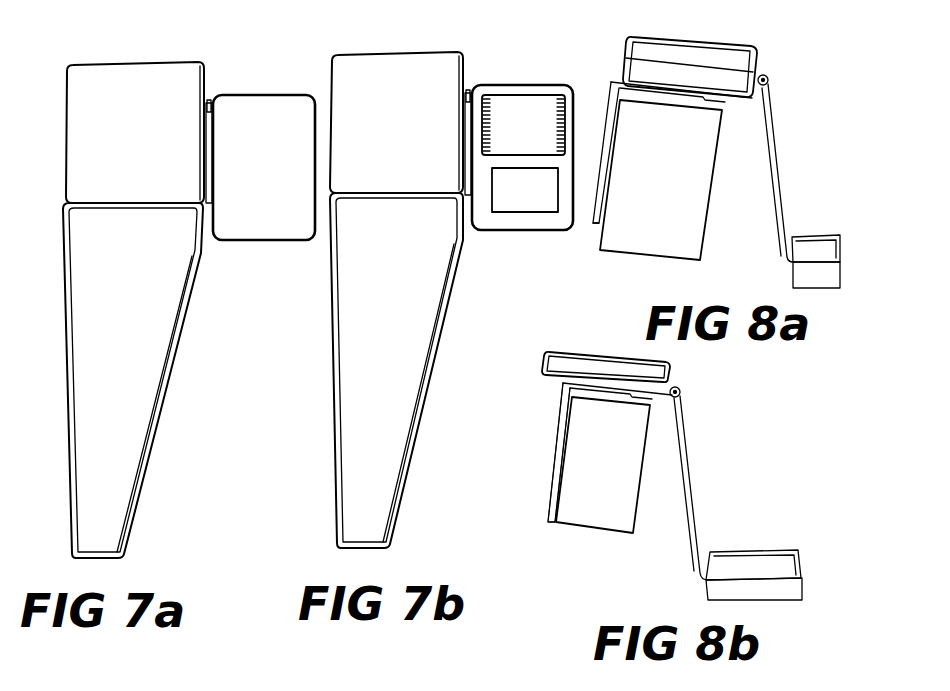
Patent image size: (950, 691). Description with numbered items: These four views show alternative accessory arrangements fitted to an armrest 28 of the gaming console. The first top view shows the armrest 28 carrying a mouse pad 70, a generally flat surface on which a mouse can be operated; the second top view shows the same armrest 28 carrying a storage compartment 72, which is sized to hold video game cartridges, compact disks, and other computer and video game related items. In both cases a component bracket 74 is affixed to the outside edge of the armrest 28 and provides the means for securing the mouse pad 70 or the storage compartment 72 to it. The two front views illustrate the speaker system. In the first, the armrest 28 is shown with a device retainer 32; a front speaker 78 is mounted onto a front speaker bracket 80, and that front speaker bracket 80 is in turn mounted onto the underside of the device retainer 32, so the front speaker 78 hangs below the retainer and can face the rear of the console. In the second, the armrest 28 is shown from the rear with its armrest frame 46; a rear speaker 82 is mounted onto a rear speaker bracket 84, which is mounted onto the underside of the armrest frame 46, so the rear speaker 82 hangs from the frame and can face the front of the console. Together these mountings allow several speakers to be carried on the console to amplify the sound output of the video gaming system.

In FIG. 7A, the armrest 28 is at (206, 58).
In FIG. 7B, the armrest 28 is at (463, 50).
In FIG. 8A, the armrest 28 is at (742, 36).
In FIG. 8B, the armrest 28 is at (578, 348).
In FIG. 8A, the device retainer 32 is at (667, 72).
In FIG. 8B, the armrest frame 46 is at (551, 378).
In FIG. 7A, the mouse pad 70 is at (249, 232).
In FIG. 7B, the storage compartment 72 is at (515, 202).
In FIG. 7A, the component bracket 74 is at (213, 95).
In FIG. 7B, the component bracket 74 is at (473, 85).
In FIG. 8A, the front speaker 78 is at (690, 212).
In FIG. 8A, the front speaker bracket 80 is at (590, 222).
In FIG. 8B, the rear speaker 82 is at (602, 510).
In FIG. 8B, the rear speaker bracket 84 is at (552, 472).